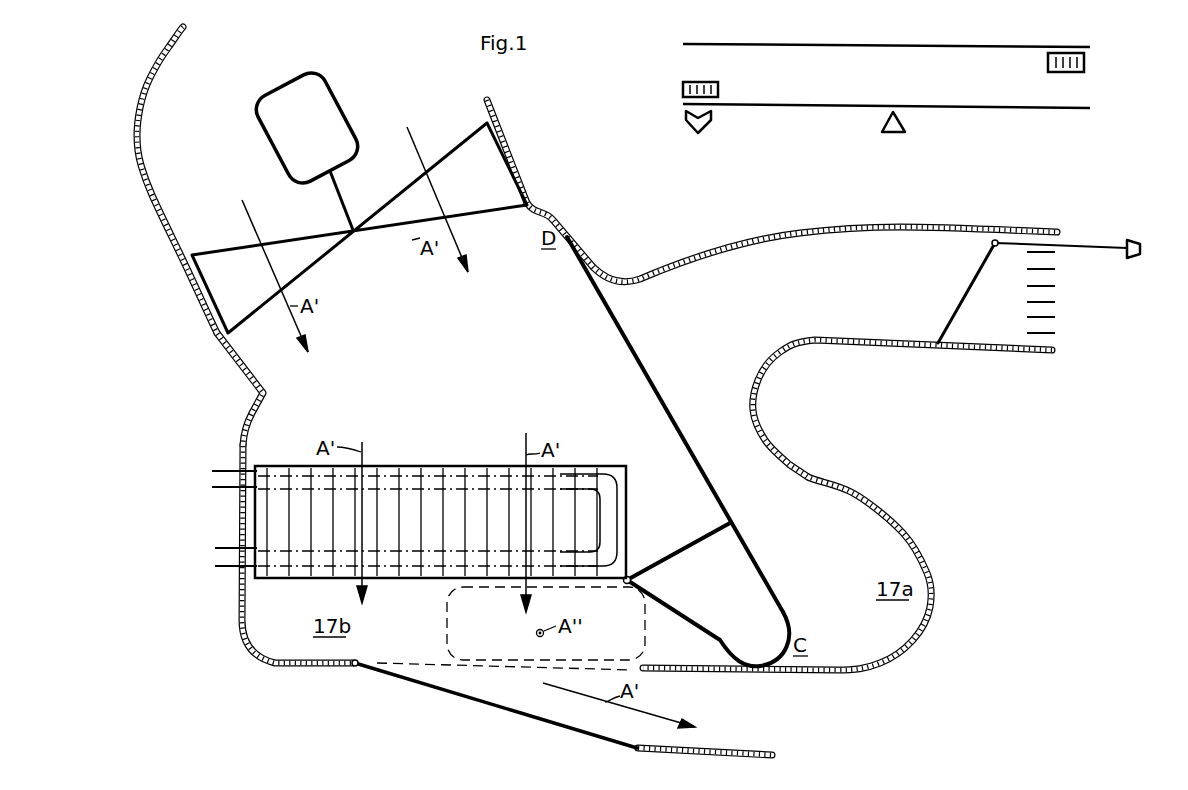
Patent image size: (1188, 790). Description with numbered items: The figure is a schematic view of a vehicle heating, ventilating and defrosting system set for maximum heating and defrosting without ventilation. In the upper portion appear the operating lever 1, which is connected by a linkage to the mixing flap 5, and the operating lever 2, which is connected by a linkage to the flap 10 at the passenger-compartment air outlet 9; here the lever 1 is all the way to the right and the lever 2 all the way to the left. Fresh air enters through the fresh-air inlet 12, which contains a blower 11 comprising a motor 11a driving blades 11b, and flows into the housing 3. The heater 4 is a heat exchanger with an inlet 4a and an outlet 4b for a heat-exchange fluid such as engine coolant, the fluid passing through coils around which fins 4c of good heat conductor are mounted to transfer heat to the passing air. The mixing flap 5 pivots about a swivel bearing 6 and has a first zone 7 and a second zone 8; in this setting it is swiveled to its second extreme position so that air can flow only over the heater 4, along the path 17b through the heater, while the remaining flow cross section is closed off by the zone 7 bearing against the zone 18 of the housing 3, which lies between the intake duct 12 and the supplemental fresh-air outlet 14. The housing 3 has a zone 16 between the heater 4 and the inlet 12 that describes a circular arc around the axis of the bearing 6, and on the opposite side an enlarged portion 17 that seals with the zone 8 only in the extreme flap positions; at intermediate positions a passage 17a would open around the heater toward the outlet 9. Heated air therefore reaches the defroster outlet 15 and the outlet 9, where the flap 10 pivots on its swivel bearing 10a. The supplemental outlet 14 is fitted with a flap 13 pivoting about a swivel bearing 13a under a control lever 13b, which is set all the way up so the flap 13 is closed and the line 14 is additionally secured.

The operating lever 1 is at (1087, 64).
The operating lever 2 is at (720, 92).
The housing 3 is at (235, 658).
The heater 4 is at (230, 528).
The inlet 4a is at (214, 482).
The outlet 4b is at (215, 558).
The fins 4c is at (468, 510).
The mixing flap 5 is at (732, 478).
The swivel bearing 6 is at (628, 578).
The first zone 7 is at (610, 305).
The second zone 8 is at (772, 583).
The passenger-compartment air outlet 9 is at (495, 668).
The flap 10 is at (540, 722).
The swivel bearing 10a is at (352, 666).
The blower 11 is at (318, 93).
The motor 11a is at (340, 120).
The blades 11b is at (494, 197).
The fresh-air inlet 12 is at (148, 185).
The flap 13 is at (960, 297).
The swivel bearing 13a is at (997, 248).
The control lever 13b is at (1108, 246).
The supplemental passenger-compartment fresh-air outlet 14 is at (890, 227).
The defroster outlet 15 is at (447, 642).
The zone 16 is at (243, 430).
The enlarged portion 17 is at (935, 598).
The path for flow around the heater 17a is at (909, 600).
The path for flow through the heater 17b is at (332, 626).
The zone 18 is at (572, 243).